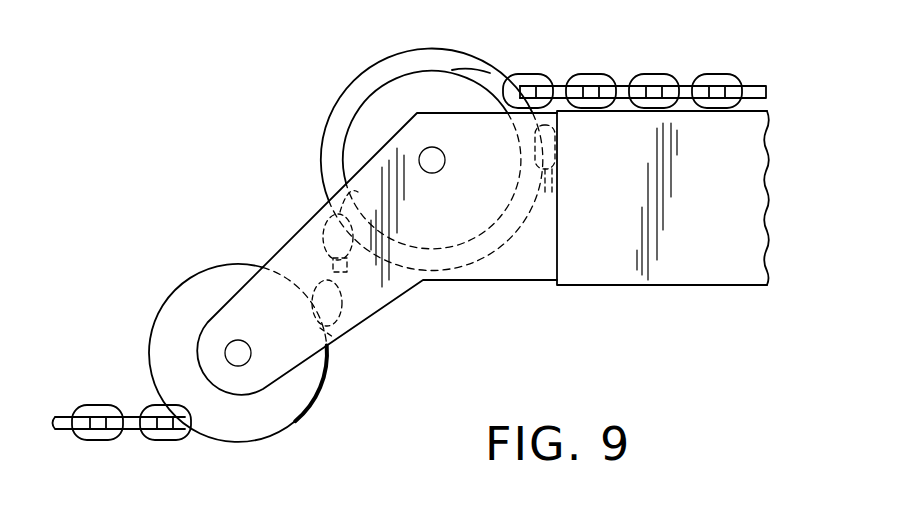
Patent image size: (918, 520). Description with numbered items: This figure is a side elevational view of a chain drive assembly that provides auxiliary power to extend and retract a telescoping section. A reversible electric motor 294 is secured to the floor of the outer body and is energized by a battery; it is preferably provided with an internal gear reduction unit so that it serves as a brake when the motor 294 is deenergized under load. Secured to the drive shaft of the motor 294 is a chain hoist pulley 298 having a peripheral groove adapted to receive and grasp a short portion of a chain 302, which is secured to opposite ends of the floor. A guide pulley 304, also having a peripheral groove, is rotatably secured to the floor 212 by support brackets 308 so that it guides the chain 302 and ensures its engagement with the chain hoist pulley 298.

The electric motor 294 is at (368, 80).
The chain hoist pulley 298 is at (355, 141).
The chain 302 is at (608, 80).
The guide pulley 304 is at (290, 407).
The support brackets 308 is at (368, 303).
The floor 212 is at (728, 220).